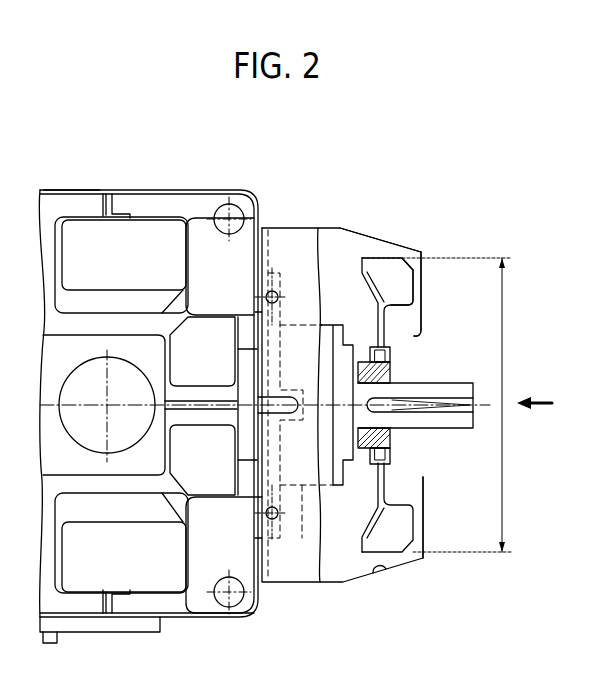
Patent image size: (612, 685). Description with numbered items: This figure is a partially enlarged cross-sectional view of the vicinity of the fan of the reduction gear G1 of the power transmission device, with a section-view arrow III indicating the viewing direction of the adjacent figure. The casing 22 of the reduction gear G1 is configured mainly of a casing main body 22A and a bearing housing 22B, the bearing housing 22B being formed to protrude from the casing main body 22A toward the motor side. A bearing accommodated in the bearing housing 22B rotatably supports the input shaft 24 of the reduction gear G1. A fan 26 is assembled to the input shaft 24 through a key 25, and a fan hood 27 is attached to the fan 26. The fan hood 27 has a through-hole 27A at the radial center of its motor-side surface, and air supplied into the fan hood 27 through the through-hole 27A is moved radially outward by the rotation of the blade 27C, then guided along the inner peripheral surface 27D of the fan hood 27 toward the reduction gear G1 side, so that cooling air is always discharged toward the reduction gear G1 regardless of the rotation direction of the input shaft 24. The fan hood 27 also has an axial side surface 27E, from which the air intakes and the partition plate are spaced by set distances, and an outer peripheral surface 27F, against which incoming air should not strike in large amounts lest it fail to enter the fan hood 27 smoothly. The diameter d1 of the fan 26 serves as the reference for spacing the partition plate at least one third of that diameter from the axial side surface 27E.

The reduction gear G1 is at (63, 185).
The casing 22 is at (139, 186).
The casing main body 22A is at (84, 189).
The bearing housing 22B is at (329, 319).
The input shaft 24 is at (450, 426).
The key 25 is at (386, 402).
The fan 26 is at (388, 274).
The fan hood 27 is at (332, 223).
The through-hole 27A is at (426, 336).
The blade 27C is at (403, 279).
The inner peripheral surface 27D is at (386, 568).
The axial side surface 27E is at (424, 517).
The outer peripheral surface 27F is at (375, 237).
The diameter of the fan d1 is at (503, 322).
The section view arrow III is at (547, 408).